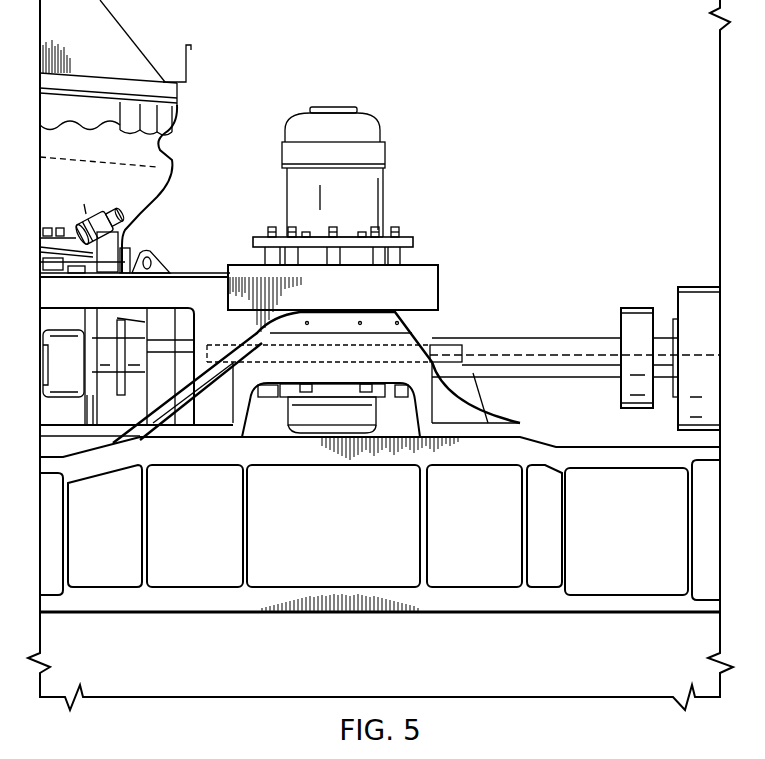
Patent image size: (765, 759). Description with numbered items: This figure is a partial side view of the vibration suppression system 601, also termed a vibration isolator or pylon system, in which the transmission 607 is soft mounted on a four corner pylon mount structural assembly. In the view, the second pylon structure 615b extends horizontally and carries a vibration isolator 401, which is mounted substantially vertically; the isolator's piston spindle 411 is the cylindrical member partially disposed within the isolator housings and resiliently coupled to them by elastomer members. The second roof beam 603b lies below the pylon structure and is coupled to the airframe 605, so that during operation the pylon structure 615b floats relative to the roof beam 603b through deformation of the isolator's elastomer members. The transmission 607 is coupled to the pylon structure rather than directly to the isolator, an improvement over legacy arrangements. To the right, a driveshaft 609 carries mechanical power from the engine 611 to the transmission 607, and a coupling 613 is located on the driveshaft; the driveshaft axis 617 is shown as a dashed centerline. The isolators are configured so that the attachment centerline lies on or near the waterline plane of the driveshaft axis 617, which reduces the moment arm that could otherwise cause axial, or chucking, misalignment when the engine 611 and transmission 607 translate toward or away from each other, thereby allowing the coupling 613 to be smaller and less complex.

The vibration suppression system 601 is at (527, 71).
The transmission 607 is at (180, 117).
The second pylon structure 615b is at (208, 275).
The vibration isolator 401 is at (391, 188).
The piston spindle 411 is at (442, 270).
The airframe 605 is at (368, 667).
The second roof beam 603b is at (250, 527).
The driveshaft 609 is at (547, 378).
The driveshaft axis 617 is at (565, 354).
The coupling 613 is at (630, 307).
The engine 611 is at (690, 286).